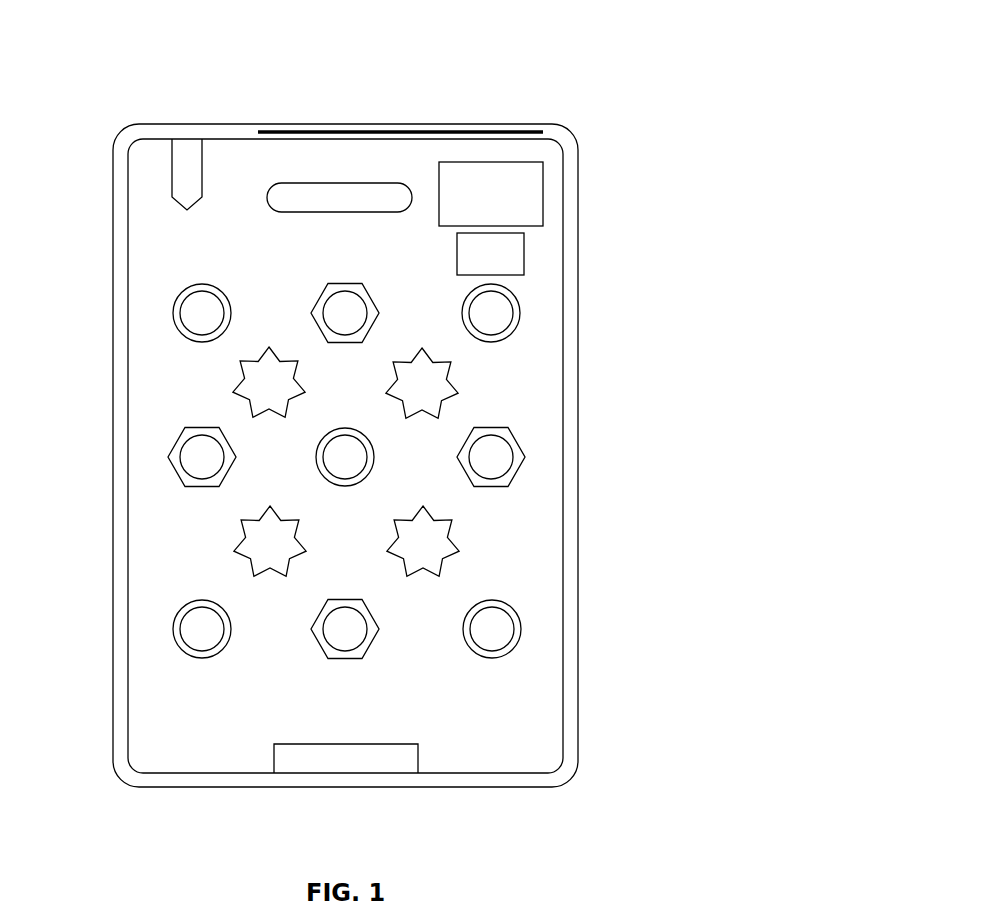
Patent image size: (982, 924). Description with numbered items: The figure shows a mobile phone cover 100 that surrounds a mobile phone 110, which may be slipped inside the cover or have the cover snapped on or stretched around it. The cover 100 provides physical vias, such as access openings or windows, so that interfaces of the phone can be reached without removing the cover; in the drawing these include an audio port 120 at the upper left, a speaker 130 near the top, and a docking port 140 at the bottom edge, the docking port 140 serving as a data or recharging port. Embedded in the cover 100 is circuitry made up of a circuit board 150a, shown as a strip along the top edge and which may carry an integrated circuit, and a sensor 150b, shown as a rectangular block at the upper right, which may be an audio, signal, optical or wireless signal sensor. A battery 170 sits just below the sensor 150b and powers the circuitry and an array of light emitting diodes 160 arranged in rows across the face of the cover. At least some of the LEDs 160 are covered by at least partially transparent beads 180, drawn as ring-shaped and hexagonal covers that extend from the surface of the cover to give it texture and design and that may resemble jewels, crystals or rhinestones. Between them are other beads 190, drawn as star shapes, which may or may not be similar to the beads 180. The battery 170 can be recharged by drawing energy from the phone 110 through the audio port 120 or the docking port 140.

The mobile phone cover 100 is at (578, 372).
The mobile phone 110 is at (563, 485).
The audio port 120 is at (172, 175).
The speaker 130 is at (338, 213).
The docking port 140 is at (367, 744).
The circuit board 150a is at (412, 128).
The sensor 150b is at (543, 193).
The light emitting diodes 160 is at (361, 298).
The battery 170 is at (524, 254).
The beads 180 is at (330, 292).
The other beads 190 is at (240, 542).